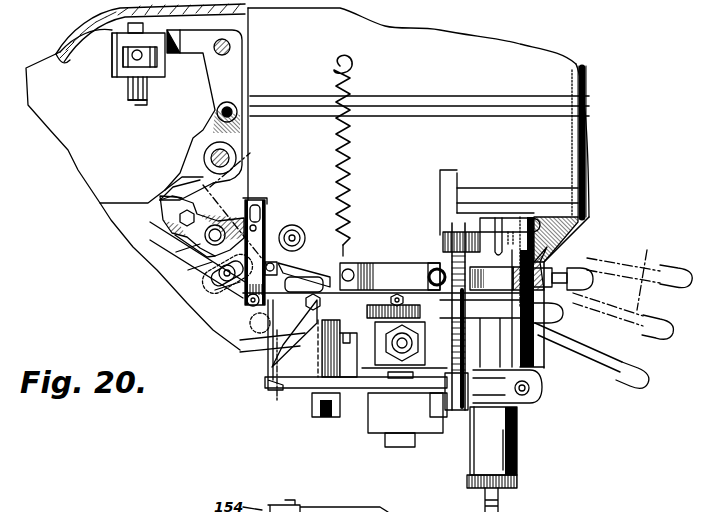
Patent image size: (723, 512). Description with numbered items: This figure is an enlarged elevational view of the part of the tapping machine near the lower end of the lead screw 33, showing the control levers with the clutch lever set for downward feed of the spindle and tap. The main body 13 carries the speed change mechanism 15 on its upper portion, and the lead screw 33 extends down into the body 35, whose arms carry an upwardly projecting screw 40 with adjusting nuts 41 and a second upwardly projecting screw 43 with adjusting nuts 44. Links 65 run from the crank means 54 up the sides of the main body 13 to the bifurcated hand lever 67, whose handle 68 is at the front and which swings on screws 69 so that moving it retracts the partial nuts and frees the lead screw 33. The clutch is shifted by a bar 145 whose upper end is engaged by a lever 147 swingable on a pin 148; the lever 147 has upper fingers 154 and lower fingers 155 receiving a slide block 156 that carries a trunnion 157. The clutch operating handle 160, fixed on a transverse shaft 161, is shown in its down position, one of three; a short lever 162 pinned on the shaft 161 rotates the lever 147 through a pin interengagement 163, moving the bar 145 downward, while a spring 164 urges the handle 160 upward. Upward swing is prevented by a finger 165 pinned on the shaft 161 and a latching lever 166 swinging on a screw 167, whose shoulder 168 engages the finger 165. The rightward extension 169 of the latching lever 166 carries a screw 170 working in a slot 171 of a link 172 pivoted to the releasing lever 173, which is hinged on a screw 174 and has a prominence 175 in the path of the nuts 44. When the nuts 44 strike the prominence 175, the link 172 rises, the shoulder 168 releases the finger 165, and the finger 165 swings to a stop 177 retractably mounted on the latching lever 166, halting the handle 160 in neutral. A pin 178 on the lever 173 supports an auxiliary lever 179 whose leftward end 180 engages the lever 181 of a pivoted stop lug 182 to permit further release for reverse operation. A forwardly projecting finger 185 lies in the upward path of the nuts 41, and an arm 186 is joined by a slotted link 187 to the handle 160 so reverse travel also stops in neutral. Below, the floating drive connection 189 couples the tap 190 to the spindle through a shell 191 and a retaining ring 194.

The speed change mechanism 15 is at (598, 89).
The main body 13 is at (520, 223).
The lead screw 33 is at (397, 358).
The body 35 is at (393, 421).
The upwardly projecting screw 40 is at (318, 390).
The adjusting nuts 41 is at (319, 363).
The upwardly projecting screw 43 is at (531, 387).
The adjusting nuts 44 is at (480, 268).
The crank means 54 is at (387, 379).
The links 65 is at (351, 268).
The bifurcated hand lever 67 is at (499, 256).
The handle 68 is at (584, 277).
The screws 69 is at (434, 268).
The shifting bar 145 is at (134, 90).
The lever 147 is at (246, 60).
The pin 148 is at (228, 42).
The upper fingers 154 is at (112, 33).
The lower fingers 155 is at (130, 73).
The slide block 156 is at (123, 60).
The trunnion 157 is at (123, 52).
The clutch operating handle 160 is at (622, 366).
The transverse shaft 161 is at (210, 154).
The short lever 162 is at (212, 140).
The pin interengagement 163 is at (218, 110).
The spring 164 is at (348, 168).
The finger 165 is at (182, 177).
The latching lever 166 is at (182, 253).
The screw 167 is at (207, 268).
The shoulder 168 is at (168, 197).
The rightward extension 169 is at (243, 207).
The screw 170 is at (268, 222).
The slot 171 is at (260, 217).
The link 172 is at (228, 312).
The releasing lever 173 is at (280, 350).
The screw 174 is at (273, 370).
The prominence 175 is at (462, 303).
The stop 177 is at (178, 212).
The pin 178 is at (397, 294).
The auxiliary lever 179 is at (537, 260).
The leftward end 180 is at (310, 277).
The lever 181 is at (303, 287).
The stop lug 182 is at (247, 330).
The forwardly projecting finger 185 is at (277, 393).
The arm 186 is at (250, 324).
The slotted link 187 is at (218, 293).
The floating drive connection 189 is at (528, 440).
The tap 190 is at (499, 508).
The shell 191 is at (518, 453).
The retaining ring 194 is at (518, 479).